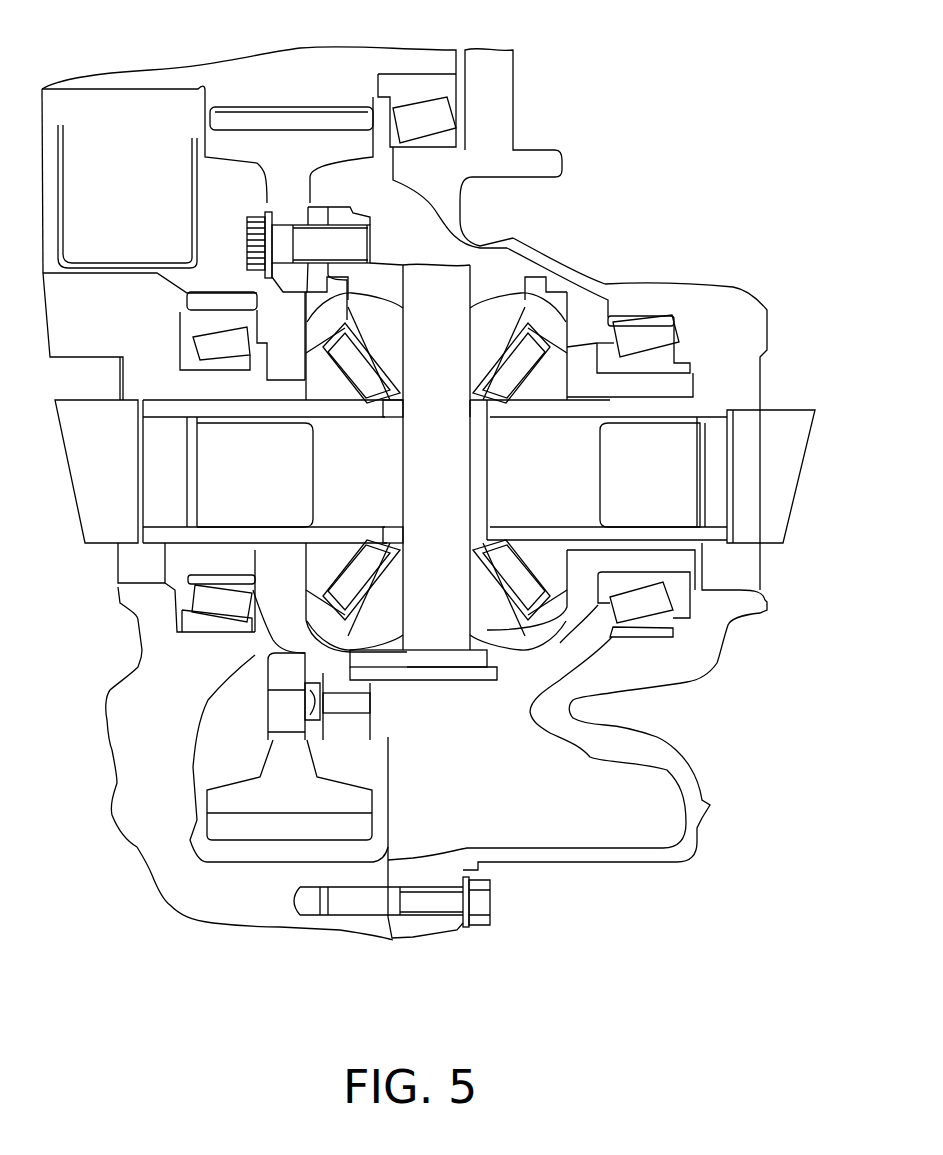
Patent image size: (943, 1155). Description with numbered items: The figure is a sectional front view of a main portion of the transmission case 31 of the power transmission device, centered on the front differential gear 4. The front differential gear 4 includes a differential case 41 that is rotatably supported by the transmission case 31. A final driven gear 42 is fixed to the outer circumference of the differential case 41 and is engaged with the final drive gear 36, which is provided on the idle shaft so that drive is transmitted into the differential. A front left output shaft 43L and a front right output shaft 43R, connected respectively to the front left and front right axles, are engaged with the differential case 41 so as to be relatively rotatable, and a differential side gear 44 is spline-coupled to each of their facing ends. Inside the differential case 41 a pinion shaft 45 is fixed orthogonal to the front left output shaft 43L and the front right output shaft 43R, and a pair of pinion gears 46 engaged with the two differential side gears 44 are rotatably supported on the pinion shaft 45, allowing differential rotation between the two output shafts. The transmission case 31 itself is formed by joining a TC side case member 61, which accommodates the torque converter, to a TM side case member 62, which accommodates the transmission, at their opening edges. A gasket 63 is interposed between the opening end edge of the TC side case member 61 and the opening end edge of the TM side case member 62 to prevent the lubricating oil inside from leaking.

The front differential gear 4 is at (566, 309).
The transmission case 31 is at (425, 947).
The final drive gear 36 is at (305, 58).
The differential case 41 is at (497, 283).
The final driven gear 42 is at (217, 801).
The front left output shaft 43L is at (80, 489).
The front right output shaft 43R is at (793, 490).
The differential side gear 44 is at (322, 553).
The pinion shaft 45 is at (452, 277).
The pinion gear 46 is at (562, 340).
The TC side case member 61 is at (637, 855).
The TM side case member 62 is at (207, 910).
The gasket 63 is at (390, 795).